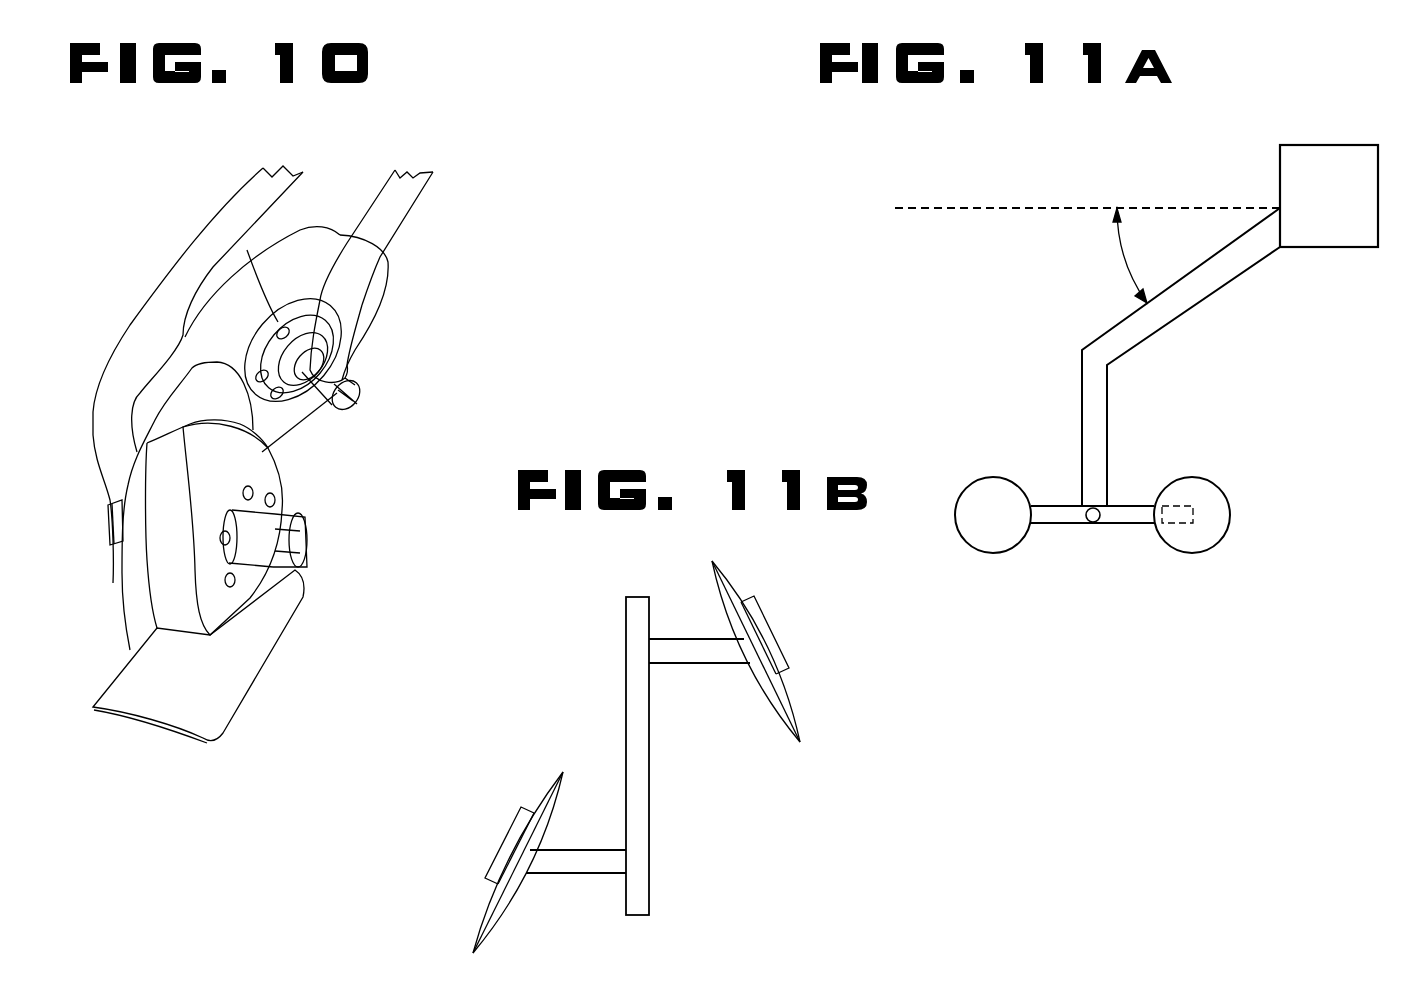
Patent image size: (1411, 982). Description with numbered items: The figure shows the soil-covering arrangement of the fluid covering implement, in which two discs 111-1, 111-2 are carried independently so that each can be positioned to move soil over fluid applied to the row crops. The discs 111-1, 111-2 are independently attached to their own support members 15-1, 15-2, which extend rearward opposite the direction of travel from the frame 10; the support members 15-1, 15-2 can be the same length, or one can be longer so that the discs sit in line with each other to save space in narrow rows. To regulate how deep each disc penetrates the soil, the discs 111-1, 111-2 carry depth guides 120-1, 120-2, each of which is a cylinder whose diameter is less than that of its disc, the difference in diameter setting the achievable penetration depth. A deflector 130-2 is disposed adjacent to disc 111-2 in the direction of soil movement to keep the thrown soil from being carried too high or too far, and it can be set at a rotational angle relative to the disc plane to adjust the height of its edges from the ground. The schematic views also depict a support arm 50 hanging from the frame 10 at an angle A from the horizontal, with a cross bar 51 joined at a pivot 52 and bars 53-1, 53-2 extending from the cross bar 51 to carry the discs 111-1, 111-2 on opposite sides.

In FIG. 11A, the frame 10 is at (1322, 145).
In FIG. 10, the support member 15-1 is at (422, 190).
In FIG. 10, the support member 15-2 is at (191, 257).
In FIG. 11A, the support arm 50 is at (1203, 300).
In FIG. 11A, the cross bar 51 is at (1064, 524).
In FIG. 11B, the cross bar 51 is at (650, 833).
In FIG. 11A, the pivot 52 is at (1100, 514).
In FIG. 11B, the first bar 53-1 is at (553, 874).
In FIG. 11B, the second bar 53-2 is at (677, 638).
In FIG. 10, the disc 111-1 is at (312, 258).
In FIG. 11A, the disc 111-1 is at (993, 477).
In FIG. 11B, the disc 111-1 is at (545, 800).
In FIG. 10, the disc 111-2 is at (115, 583).
In FIG. 11A, the disc 111-2 is at (1210, 480).
In FIG. 11B, the disc 111-2 is at (795, 712).
In FIG. 10, the depth guide 120-1 is at (273, 247).
In FIG. 10, the depth guide 120-2 is at (203, 458).
In FIG. 10, the deflector 130-2 is at (193, 690).
In FIG. 11A, the angle A is at (1118, 253).